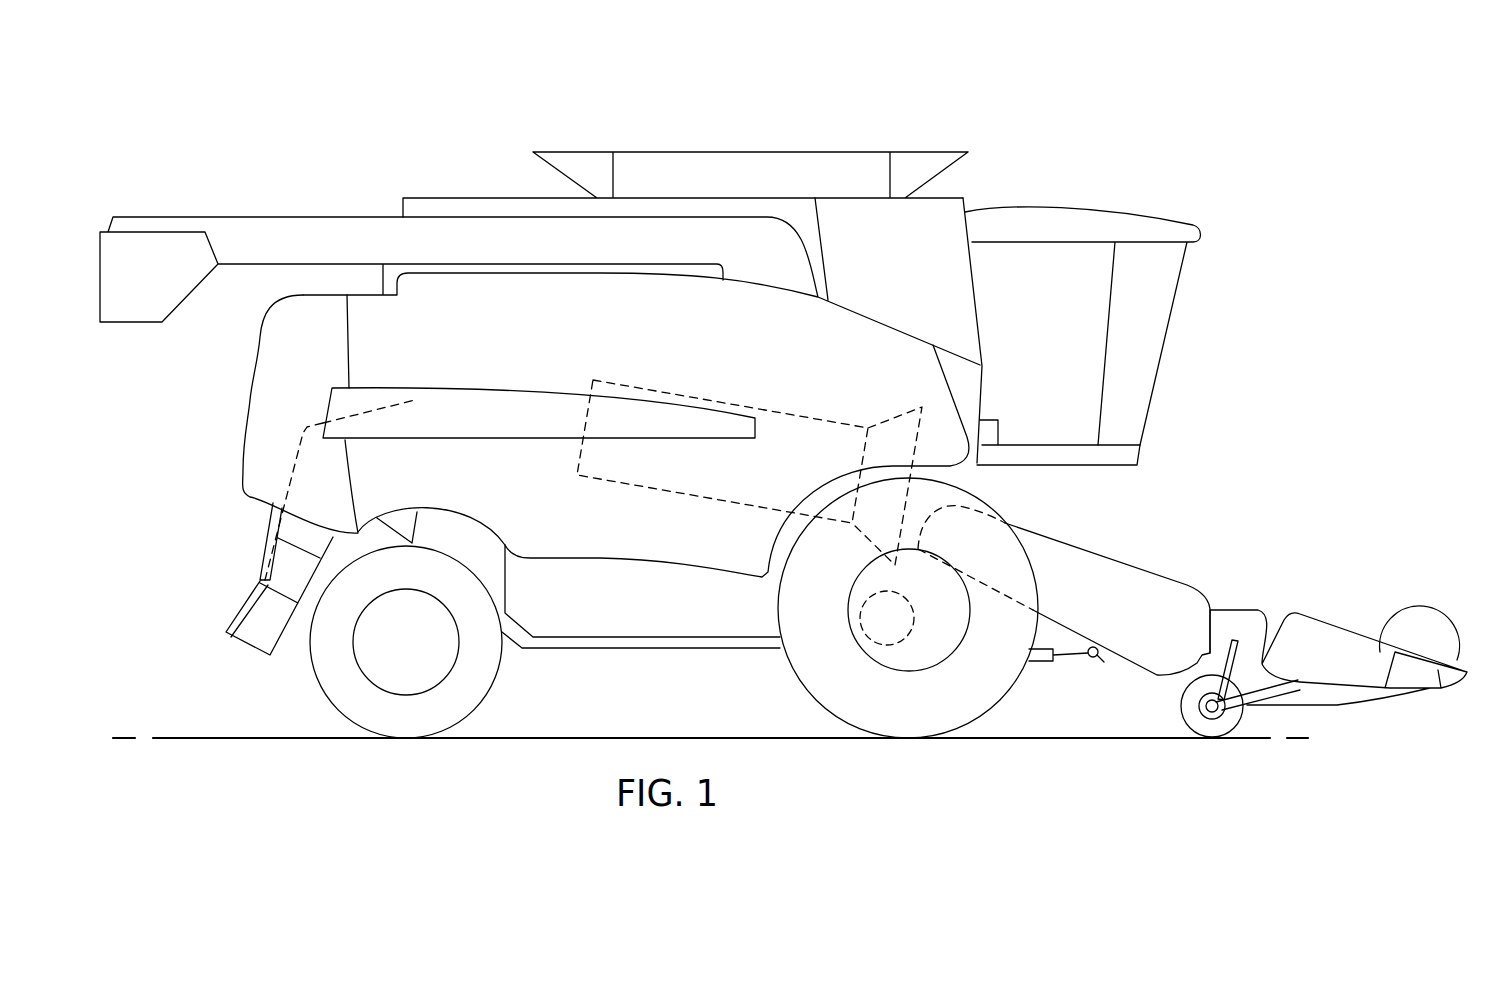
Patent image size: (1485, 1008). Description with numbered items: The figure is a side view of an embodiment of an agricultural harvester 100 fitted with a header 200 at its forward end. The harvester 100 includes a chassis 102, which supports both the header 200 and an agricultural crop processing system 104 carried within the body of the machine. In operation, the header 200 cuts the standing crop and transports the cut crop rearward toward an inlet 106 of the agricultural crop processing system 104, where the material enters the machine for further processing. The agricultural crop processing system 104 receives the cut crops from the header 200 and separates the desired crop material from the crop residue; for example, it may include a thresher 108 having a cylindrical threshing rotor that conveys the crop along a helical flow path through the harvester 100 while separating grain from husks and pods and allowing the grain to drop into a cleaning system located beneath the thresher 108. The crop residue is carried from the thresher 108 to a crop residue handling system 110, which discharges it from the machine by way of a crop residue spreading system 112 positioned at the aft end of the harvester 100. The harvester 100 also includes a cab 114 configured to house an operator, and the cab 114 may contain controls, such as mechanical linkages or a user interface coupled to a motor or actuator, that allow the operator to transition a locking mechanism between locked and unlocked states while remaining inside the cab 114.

The agricultural harvester 100 is at (1130, 150).
The chassis 102 is at (555, 655).
The agricultural crop processing system 104 is at (795, 383).
The inlet 106 is at (1038, 508).
The thresher 108 is at (803, 413).
The crop residue handling system 110 is at (400, 372).
The crop residue spreading system 112 is at (233, 596).
The cab 114 is at (1210, 326).
The header 200 is at (1360, 605).